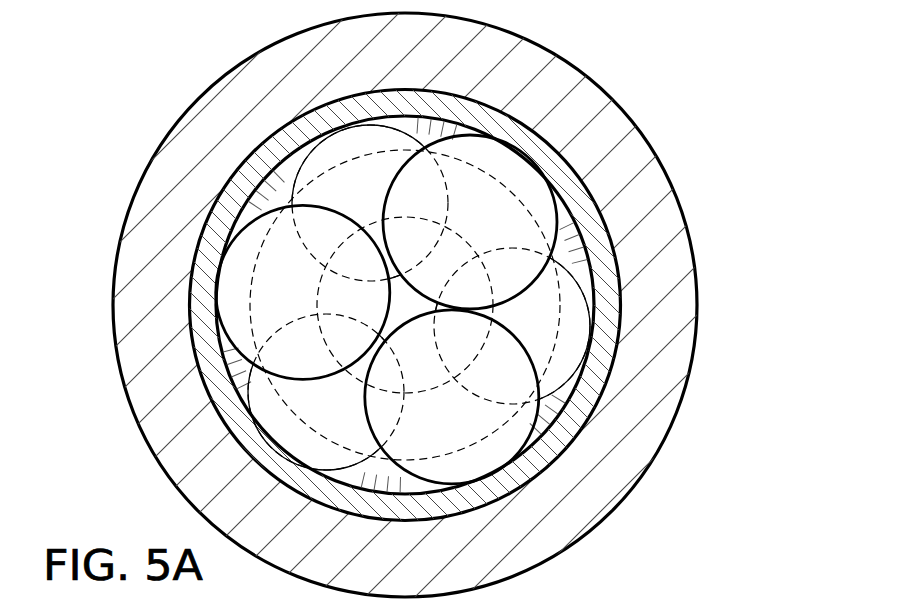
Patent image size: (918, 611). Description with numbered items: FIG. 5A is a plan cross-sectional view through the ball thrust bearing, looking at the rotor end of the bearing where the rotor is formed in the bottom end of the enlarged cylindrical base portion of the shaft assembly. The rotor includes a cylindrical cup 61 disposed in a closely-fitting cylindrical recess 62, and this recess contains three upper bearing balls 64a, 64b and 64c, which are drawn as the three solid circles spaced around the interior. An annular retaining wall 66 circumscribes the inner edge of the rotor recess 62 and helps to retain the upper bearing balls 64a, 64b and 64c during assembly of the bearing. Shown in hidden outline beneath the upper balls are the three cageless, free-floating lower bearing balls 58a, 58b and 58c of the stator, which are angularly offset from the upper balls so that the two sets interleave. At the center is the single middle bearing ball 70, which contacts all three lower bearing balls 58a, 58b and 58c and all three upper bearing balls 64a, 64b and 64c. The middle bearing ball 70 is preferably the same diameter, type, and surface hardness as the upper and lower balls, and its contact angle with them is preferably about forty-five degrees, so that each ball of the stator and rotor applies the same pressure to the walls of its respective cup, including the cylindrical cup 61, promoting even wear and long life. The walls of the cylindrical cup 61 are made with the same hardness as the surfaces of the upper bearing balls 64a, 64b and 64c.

The bearing ball 58a is at (352, 411).
The bearing ball 58b is at (550, 329).
The bearing ball 58c is at (368, 201).
The upper bearing ball 64a is at (307, 296).
The upper bearing ball 64b is at (465, 432).
The upper bearing ball 64c is at (505, 216).
The middle bearing ball 70 is at (417, 314).
The cylindrical cup 61 is at (530, 151).
The cylindrical recess 62 is at (576, 213).
The annular retaining wall 66 is at (550, 410).